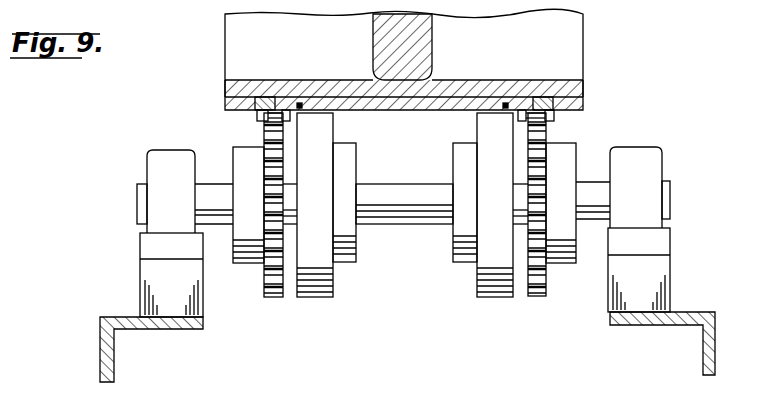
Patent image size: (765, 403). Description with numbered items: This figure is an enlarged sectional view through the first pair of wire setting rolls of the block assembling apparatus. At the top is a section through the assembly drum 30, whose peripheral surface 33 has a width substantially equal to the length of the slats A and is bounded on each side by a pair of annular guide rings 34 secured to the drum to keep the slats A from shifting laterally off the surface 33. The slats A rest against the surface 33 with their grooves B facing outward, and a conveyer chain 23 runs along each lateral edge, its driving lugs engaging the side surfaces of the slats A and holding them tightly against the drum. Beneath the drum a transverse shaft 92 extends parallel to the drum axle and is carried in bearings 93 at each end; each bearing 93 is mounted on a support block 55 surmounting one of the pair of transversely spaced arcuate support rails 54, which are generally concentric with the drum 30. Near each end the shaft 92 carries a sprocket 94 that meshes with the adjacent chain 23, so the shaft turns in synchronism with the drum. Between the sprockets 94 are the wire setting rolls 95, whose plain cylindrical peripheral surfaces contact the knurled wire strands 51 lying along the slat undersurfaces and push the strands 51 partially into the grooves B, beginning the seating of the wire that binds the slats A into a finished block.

The assembly drum 30 is at (585, 40).
The peripheral surface 33 is at (445, 98).
The annular guide rings 34 is at (228, 106).
The conveyer chain 23 is at (257, 119).
The wire strand 51 is at (296, 106).
The slats A is at (348, 100).
The grooves B is at (301, 103).
The transverse shaft 92 is at (668, 196).
The bearings 93 is at (151, 157).
The sprockets 94 is at (238, 147).
The wire setting rolls 95 is at (330, 143).
The support block 55 is at (140, 292).
The arcuate support rail 54 is at (113, 345).